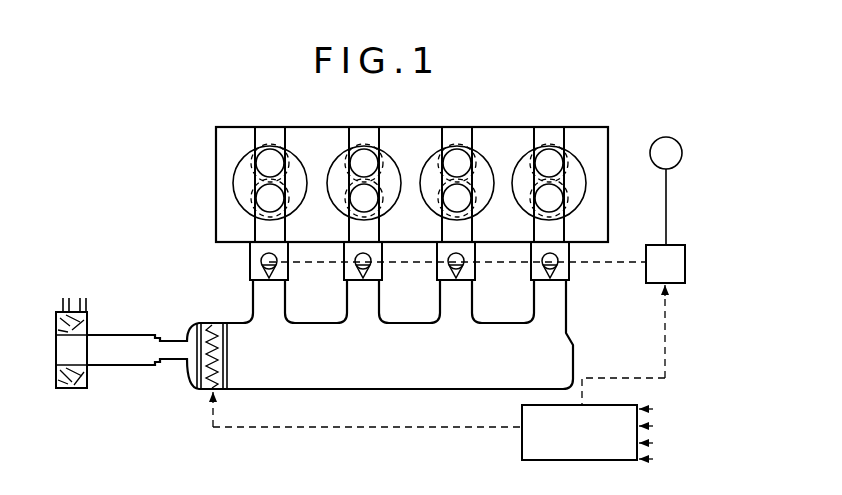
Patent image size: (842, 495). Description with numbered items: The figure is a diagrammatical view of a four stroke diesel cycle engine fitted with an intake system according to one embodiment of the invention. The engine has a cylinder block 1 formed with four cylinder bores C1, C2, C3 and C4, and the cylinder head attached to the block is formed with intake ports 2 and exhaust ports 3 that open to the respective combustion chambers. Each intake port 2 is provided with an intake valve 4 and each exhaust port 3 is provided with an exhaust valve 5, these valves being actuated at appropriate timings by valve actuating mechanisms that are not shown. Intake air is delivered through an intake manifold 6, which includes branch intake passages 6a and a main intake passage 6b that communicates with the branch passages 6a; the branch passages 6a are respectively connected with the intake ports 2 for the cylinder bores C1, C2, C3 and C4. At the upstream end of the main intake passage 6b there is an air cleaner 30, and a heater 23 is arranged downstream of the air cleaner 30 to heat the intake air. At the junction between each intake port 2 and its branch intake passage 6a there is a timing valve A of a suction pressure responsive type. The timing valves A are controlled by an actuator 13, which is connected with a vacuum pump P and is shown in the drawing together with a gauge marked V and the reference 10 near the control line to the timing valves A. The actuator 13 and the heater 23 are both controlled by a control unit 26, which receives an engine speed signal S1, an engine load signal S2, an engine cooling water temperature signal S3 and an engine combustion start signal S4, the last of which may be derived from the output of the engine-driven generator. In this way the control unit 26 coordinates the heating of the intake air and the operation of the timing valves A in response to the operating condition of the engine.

The cylinder block 1 is at (611, 127).
The intake ports 2 is at (252, 228).
The exhaust ports 3 is at (283, 151).
The intake valve 4 is at (256, 203).
The exhaust valve 5 is at (252, 161).
The intake manifold 6 is at (576, 361).
The branch intake passages 6a is at (283, 312).
The main intake passage 6b is at (236, 390).
The fuel injector 10 is at (627, 262).
The actuator 13 is at (650, 245).
The heater 23 is at (206, 323).
The control unit 26 is at (522, 447).
The air cleaner 30 is at (75, 389).
The cylinder bore C1 is at (233, 184).
The cylinder bore C2 is at (330, 196).
The cylinder bore C3 is at (424, 196).
The cylinder bore C4 is at (586, 186).
The timing valve A is at (289, 269).
The vacuum pump P is at (650, 157).
The voltage gauge V is at (666, 153).
The engine speed signal S1 is at (659, 409).
The engine load signal S2 is at (659, 426).
The engine cooling water temperature signal S3 is at (659, 443).
The engine combustion start signal S4 is at (659, 459).